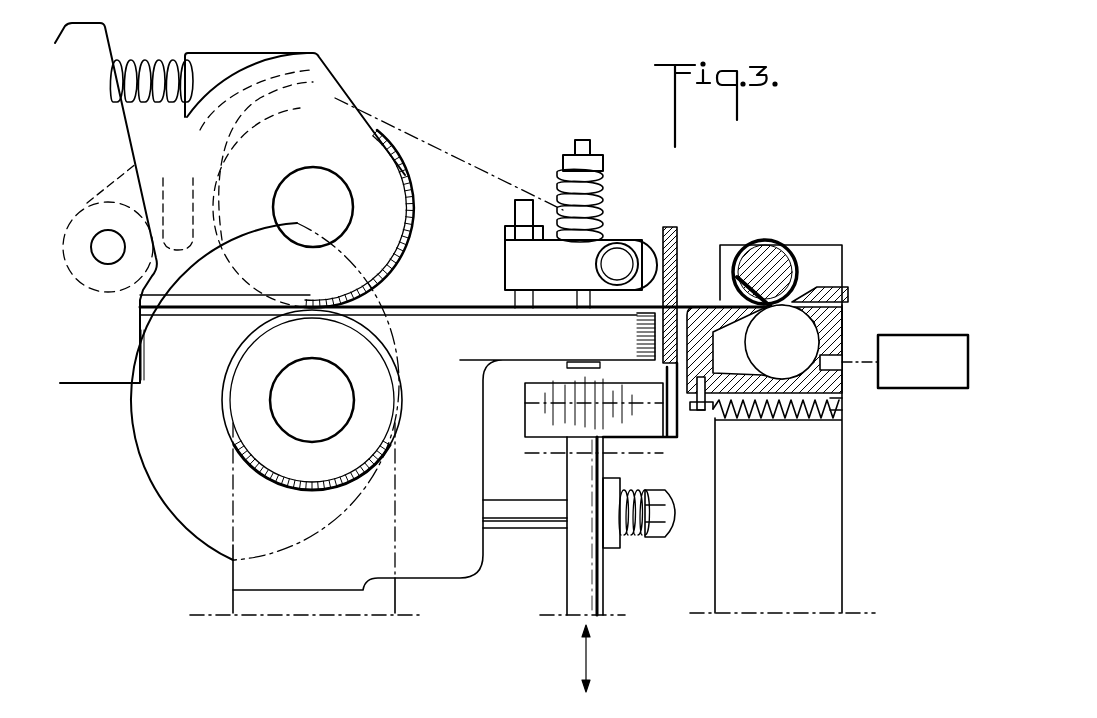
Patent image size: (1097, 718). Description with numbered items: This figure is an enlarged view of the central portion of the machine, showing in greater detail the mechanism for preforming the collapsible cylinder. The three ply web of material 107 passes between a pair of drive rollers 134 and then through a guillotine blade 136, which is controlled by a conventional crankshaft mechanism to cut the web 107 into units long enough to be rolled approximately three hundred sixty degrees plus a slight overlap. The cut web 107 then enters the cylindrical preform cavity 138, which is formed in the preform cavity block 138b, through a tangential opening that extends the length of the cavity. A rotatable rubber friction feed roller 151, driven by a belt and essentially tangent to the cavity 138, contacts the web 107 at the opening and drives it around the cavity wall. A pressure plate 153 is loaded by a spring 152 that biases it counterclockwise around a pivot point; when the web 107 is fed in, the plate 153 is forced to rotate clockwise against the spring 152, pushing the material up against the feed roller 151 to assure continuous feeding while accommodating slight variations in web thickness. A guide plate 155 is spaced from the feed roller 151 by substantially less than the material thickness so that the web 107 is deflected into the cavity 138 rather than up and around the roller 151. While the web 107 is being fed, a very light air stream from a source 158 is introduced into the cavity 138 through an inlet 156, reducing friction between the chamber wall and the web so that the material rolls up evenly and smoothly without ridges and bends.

The drive rollers 134 is at (373, 170).
The web of material 107 is at (463, 300).
The guillotine blade 136 is at (677, 236).
The pressure plate 153 is at (695, 306).
The feed roller 151 is at (770, 248).
The guide plate 155 is at (830, 290).
The preform cavity block 138b is at (845, 311).
The preform cavity 138 is at (796, 328).
The air source 158 is at (960, 335).
The inlet 156 is at (843, 370).
The spring 152 is at (818, 428).